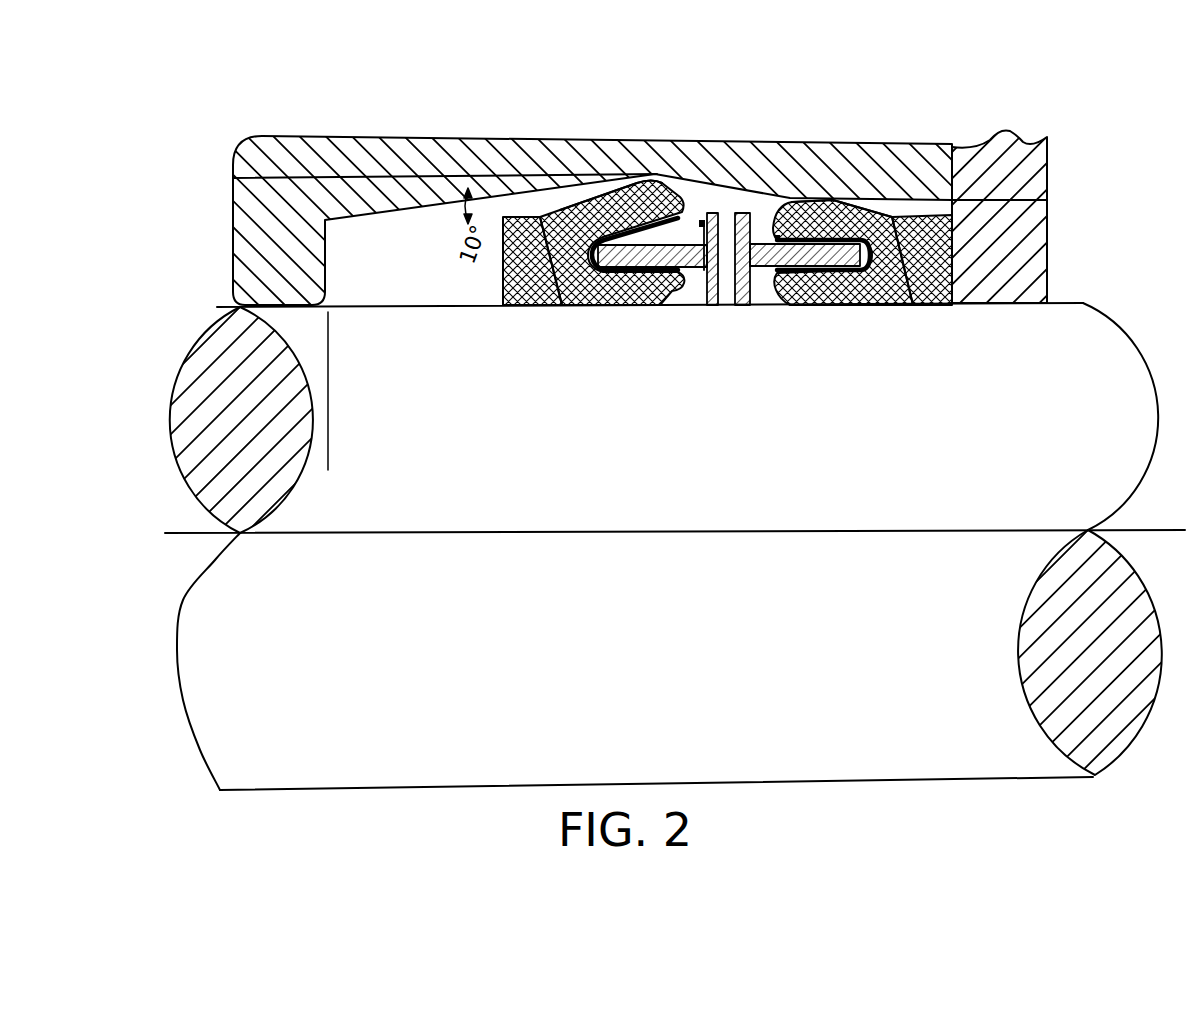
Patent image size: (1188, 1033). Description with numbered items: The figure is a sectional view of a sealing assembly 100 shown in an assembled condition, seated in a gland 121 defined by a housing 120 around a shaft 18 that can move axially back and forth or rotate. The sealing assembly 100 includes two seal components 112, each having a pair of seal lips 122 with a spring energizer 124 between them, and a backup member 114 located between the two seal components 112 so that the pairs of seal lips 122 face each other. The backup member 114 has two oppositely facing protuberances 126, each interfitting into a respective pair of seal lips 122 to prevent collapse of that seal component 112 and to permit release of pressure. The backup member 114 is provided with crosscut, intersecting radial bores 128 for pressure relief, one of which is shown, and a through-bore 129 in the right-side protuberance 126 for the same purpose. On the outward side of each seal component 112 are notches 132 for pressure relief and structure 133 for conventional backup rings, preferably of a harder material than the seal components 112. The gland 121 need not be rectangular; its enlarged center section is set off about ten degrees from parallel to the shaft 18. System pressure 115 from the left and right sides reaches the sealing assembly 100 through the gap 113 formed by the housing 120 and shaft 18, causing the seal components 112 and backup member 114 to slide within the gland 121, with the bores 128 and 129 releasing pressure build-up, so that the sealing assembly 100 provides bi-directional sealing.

The shaft 18 is at (1125, 375).
The sealing assembly 100 is at (477, 336).
The seal component 112 is at (573, 305).
The gap 113 is at (210, 303).
The backup member 114 is at (702, 322).
The system pressure 115 is at (188, 298).
The housing 120 is at (372, 132).
The gland 121 is at (602, 177).
The seal lip 122 is at (675, 195).
The spring energizer 124 is at (592, 197).
The protuberance 126 is at (618, 283).
The bore 128 is at (725, 213).
The through-bore 129 is at (764, 278).
The notch 132 is at (498, 238).
The structure for conventional backup rings 133 is at (527, 305).